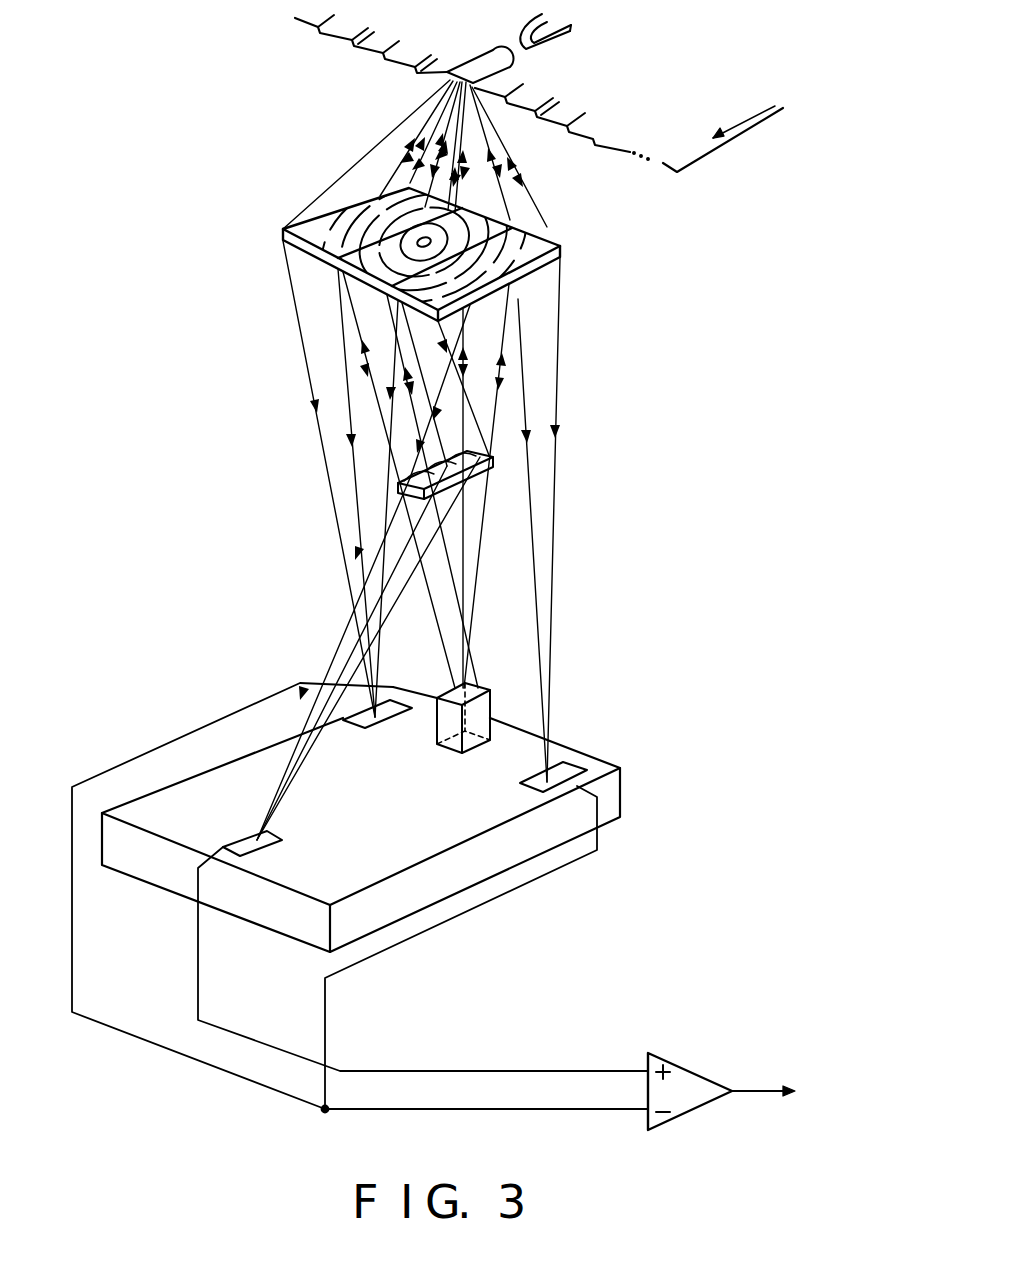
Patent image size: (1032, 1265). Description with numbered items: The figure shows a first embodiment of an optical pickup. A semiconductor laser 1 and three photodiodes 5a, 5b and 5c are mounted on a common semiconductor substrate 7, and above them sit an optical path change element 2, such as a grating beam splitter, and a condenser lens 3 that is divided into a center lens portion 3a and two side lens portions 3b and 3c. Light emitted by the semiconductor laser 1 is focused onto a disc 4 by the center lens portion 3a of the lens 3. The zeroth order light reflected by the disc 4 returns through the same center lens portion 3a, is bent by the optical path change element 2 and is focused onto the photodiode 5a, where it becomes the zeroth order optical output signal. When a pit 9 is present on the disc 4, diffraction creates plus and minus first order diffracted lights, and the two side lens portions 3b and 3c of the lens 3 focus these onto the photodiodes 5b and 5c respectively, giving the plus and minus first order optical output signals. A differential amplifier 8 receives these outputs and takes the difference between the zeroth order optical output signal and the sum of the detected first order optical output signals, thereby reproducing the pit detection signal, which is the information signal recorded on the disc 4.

The semiconductor laser 1 is at (490, 702).
The optical path change element 2 is at (493, 458).
The condenser lens 3 is at (578, 266).
The center lens portion 3a is at (462, 209).
The side lens portion 3b is at (505, 244).
The side lens portion 3c is at (335, 216).
The disc 4 is at (707, 145).
The photodiode 5a is at (267, 842).
The photodiode 5b is at (570, 773).
The photodiode 5c is at (367, 716).
The semiconductor substrate 7 is at (610, 795).
The differential amplifier 8 is at (688, 1075).
The pit 9 is at (495, 62).